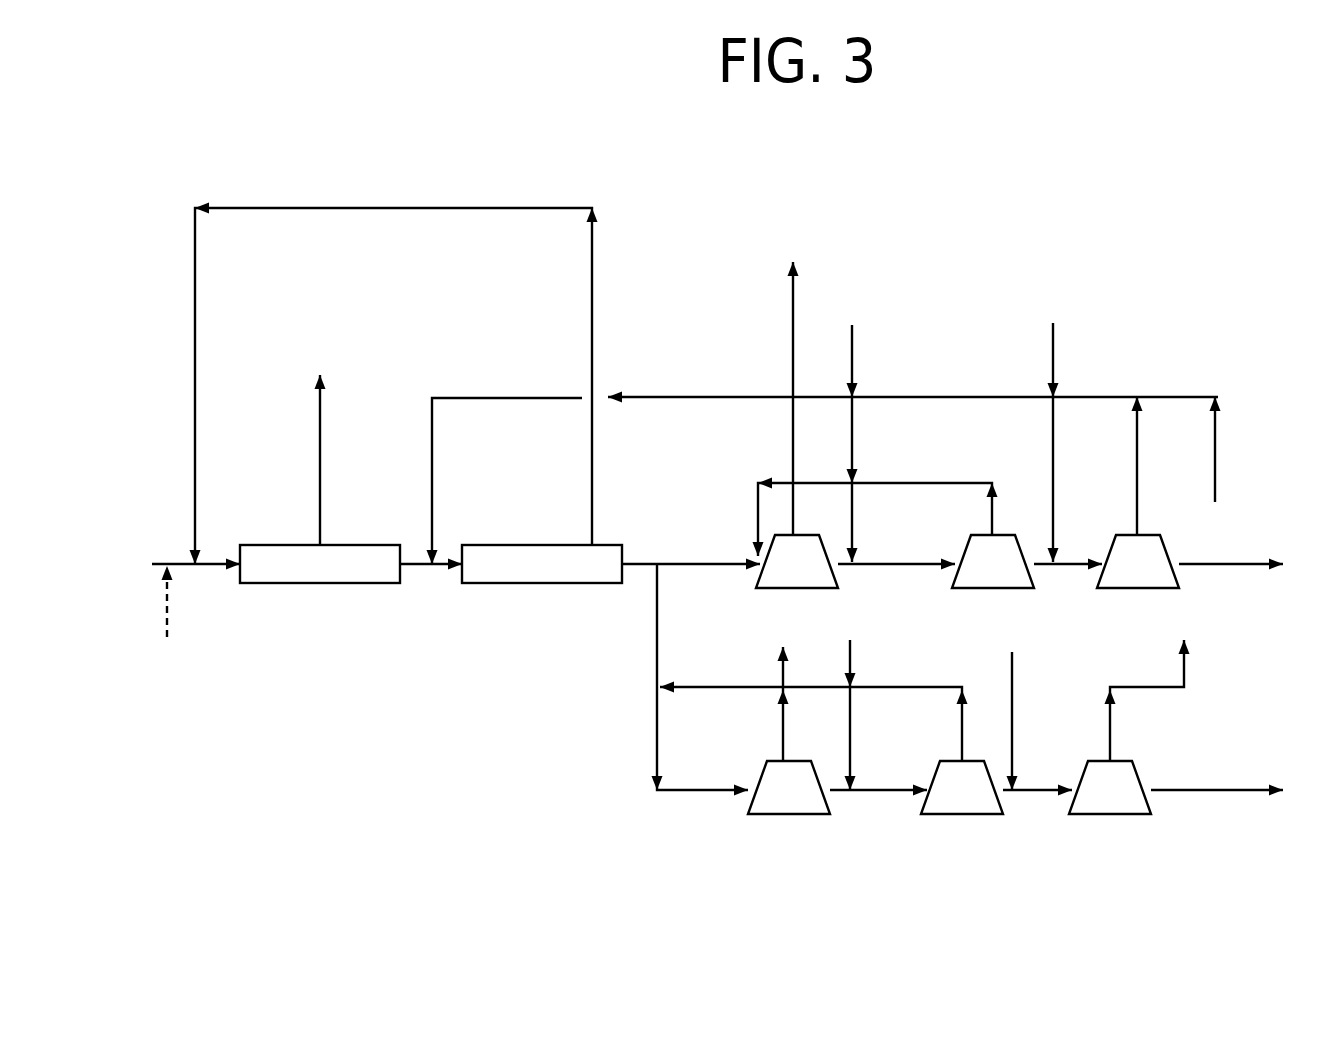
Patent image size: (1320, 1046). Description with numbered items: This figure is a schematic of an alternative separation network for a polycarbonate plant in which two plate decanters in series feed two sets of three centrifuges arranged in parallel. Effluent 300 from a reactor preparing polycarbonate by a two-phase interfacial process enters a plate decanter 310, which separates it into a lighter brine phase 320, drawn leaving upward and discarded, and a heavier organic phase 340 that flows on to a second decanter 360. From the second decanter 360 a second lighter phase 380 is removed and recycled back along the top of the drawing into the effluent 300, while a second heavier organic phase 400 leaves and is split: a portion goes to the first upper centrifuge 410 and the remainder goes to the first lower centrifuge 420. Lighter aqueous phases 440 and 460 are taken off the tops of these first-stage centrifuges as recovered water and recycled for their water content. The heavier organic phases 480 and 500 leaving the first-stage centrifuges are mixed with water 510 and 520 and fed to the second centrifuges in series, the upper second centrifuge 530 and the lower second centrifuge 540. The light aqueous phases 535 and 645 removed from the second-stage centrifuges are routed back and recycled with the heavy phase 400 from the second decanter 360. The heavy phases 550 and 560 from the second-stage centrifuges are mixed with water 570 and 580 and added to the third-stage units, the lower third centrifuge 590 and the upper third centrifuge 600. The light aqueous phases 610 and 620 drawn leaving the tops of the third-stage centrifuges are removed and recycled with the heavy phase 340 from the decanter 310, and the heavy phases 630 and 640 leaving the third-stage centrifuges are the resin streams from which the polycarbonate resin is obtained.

The effluent 300 is at (190, 618).
The plate decanter 310 is at (312, 583).
The lighter brine phase 320 is at (343, 460).
The heavier organic phase 340 is at (491, 508).
The second decanter 360 is at (543, 583).
The second lighter phase 380 is at (419, 384).
The second heavier organic phase 400 is at (691, 542).
The centrifuge A 410 is at (802, 588).
The centrifuge A1 420 is at (780, 814).
The lighter aqueous phase 440 is at (784, 376).
The lighter aqueous phase 460 is at (730, 760).
The heavier organic phase 480 is at (878, 813).
The heavier organic phase 500 is at (896, 581).
The water 510 is at (875, 696).
The water 520 is at (883, 441).
The centrifuge B 530 is at (985, 588).
The light aqueous phase 535 is at (875, 497).
The centrifuge B1 540 is at (960, 814).
The heavy phase 550 is at (1037, 813).
The heavy phase 560 is at (1068, 581).
The water 570 is at (1038, 717).
The water 580 is at (1081, 441).
The centrifuge C1 590 is at (1110, 814).
The centrifuge C 600 is at (1138, 588).
The light aqueous phase 610 is at (1147, 700).
The overhead stream from vessel C 620 is at (1161, 466).
The heavy phase 630 is at (1230, 562).
The heavy phase 640 is at (1217, 790).
The light aqueous phase 645 is at (814, 701).